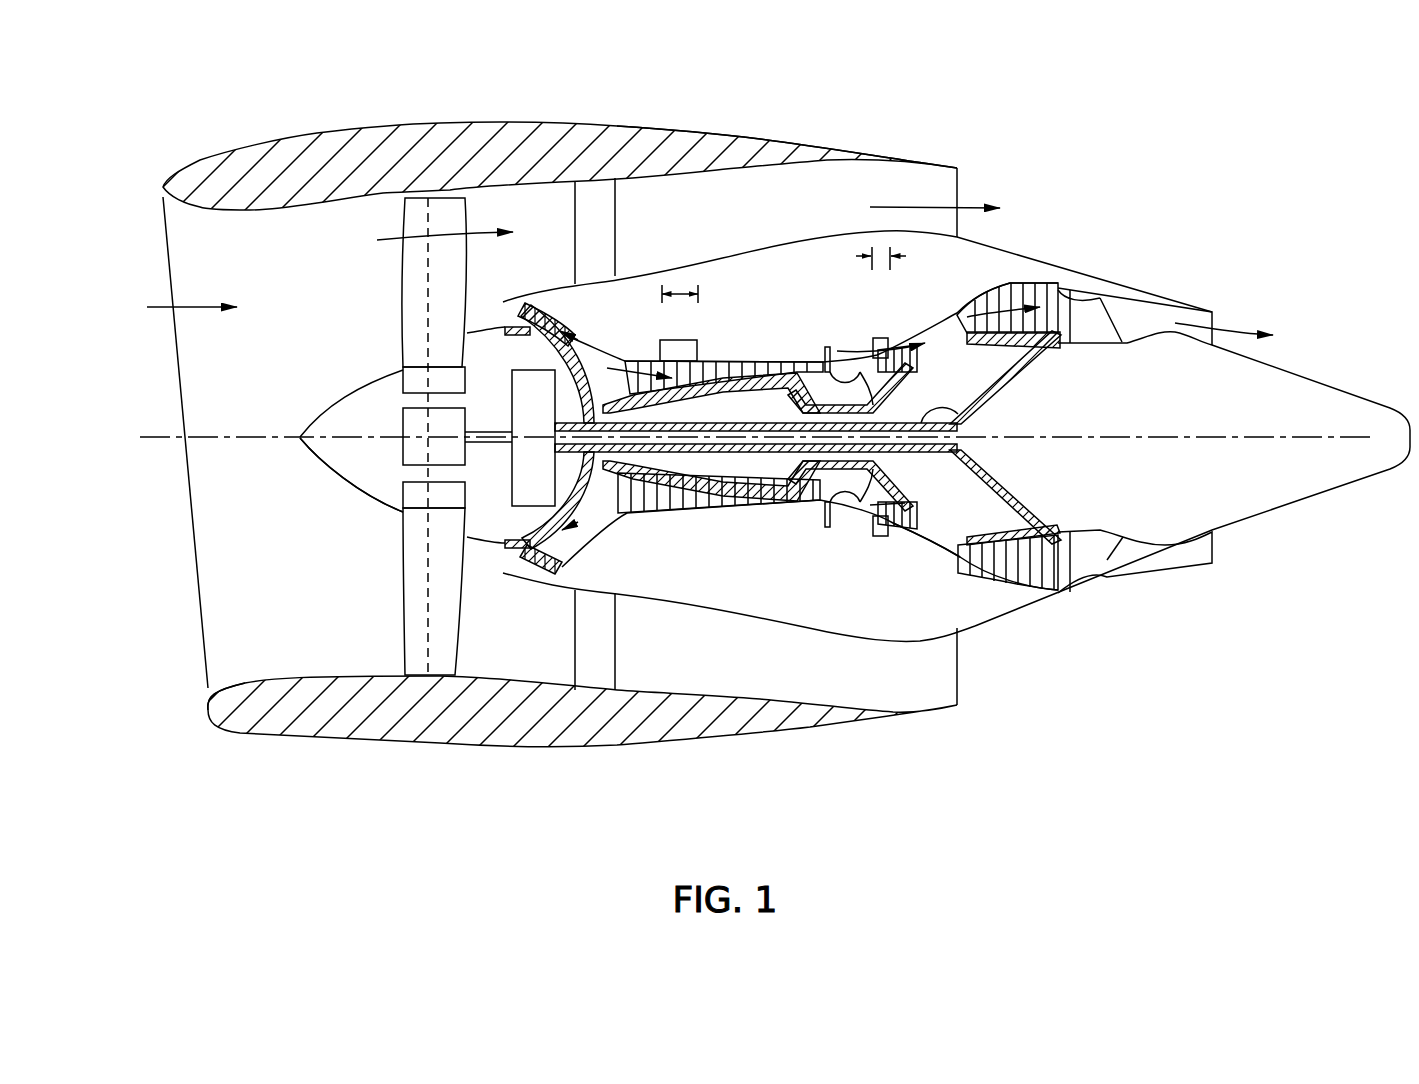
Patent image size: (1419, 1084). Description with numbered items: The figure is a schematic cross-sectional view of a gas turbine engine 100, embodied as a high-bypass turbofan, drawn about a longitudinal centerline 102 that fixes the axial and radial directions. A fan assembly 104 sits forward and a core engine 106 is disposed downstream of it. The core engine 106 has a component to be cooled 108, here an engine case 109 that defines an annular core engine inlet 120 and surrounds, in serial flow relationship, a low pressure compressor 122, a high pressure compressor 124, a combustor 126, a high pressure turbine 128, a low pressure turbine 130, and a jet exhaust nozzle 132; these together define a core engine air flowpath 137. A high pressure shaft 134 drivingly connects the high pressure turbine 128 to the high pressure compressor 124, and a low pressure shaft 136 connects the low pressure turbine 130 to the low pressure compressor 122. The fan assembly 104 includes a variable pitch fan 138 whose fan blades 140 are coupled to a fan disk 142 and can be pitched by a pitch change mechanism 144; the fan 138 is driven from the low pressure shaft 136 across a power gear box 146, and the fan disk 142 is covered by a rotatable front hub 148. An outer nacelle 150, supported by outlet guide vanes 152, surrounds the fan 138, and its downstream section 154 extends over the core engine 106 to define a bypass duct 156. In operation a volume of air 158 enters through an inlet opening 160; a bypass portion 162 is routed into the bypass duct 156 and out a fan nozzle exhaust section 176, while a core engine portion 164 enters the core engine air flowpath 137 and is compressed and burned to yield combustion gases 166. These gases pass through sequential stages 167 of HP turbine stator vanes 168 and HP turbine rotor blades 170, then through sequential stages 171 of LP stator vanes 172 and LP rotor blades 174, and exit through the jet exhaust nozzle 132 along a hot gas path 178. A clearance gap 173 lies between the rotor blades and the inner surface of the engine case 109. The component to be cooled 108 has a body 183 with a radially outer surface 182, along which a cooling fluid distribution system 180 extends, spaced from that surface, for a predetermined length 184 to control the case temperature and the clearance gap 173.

The gas turbine engine 100 is at (1117, 150).
The longitudinal centerline 102 is at (1157, 437).
The fan assembly 104 is at (306, 232).
The core engine 106 is at (725, 322).
The component to be cooled 108 is at (763, 503).
The engine case 109 is at (770, 503).
The annular core engine inlet 120 is at (517, 558).
The low pressure compressor 122 is at (583, 490).
The high pressure compressor 124 is at (637, 510).
The combustor 126 is at (847, 514).
The high pressure turbine 128 is at (915, 517).
The low pressure turbine 130 is at (1057, 582).
The jet exhaust nozzle 132 is at (1120, 562).
The high pressure shaft 134 is at (890, 386).
The low pressure shaft 136 is at (960, 412).
The core engine air flowpath 137 is at (598, 535).
The variable pitch fan 138 is at (347, 490).
The fan blades 140 is at (405, 618).
The fan disk 142 is at (415, 383).
The pitch change mechanism 144 is at (402, 420).
The power gear box 146 is at (535, 383).
The rotatable front hub 148 is at (312, 450).
The outer nacelle 150 is at (458, 745).
The outlet guide vanes 152 is at (615, 210).
The downstream section 154 is at (843, 148).
The bypass duct 156 is at (735, 226).
The volume of air 158 is at (193, 309).
The inlet opening 160 is at (203, 687).
The bypass portion 162 is at (411, 236).
The core engine portion 164 is at (490, 310).
The combustion gases 166 is at (893, 350).
The sequential stages 167 is at (760, 504).
The HP turbine stator vanes 168 is at (865, 516).
The HP turbine rotor blades 170 is at (890, 477).
The sequential stages 171 is at (885, 507).
The LP stator vanes 172 is at (960, 573).
The clearance gap 173 is at (1063, 285).
The LP rotor blades 174 is at (980, 584).
The fan nozzle exhaust section 176 is at (943, 187).
The hot gas path 178 is at (933, 310).
The cooling fluid distribution system 180 is at (678, 340).
The radially outer surface 182 is at (758, 358).
The body 183 is at (778, 362).
The predetermined length 184 is at (880, 248).